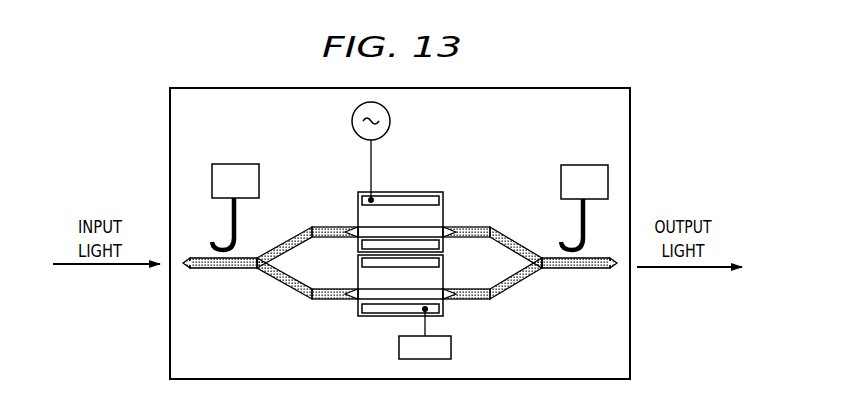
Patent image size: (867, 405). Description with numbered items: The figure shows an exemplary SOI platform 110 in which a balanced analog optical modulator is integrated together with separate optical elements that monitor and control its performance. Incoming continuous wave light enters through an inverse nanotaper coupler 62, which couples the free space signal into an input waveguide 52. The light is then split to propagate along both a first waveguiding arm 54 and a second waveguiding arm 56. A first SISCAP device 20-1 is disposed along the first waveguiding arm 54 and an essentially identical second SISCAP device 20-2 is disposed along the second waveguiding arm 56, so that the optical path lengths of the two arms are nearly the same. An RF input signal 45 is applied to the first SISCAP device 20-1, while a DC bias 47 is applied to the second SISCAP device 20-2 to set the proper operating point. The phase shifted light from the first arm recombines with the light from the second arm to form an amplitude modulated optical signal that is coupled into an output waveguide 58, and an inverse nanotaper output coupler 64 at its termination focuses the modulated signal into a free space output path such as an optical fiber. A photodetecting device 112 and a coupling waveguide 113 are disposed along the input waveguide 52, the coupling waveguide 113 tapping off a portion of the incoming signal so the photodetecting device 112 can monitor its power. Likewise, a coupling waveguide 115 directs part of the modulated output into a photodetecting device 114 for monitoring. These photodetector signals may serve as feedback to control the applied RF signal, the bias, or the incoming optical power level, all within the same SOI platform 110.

The SOI platform 110 is at (568, 96).
The RF input signal 45 is at (390, 121).
The DC bias 47 is at (451, 347).
The first SISCAP device 20-1 is at (406, 189).
The second SISCAP device 20-2 is at (379, 320).
The input waveguide 52 is at (232, 270).
The first waveguiding arm 54 is at (333, 226).
The second waveguiding arm 56 is at (324, 301).
The output waveguide 58 is at (570, 271).
The inverse nanotaper coupler 62 is at (190, 270).
The inverse nanotaper output coupler 64 is at (607, 271).
The photodetecting device 112 is at (235, 181).
The coupling waveguide 113 is at (236, 215).
The photodetecting device 114 is at (584, 182).
The coupling waveguide 115 is at (581, 220).